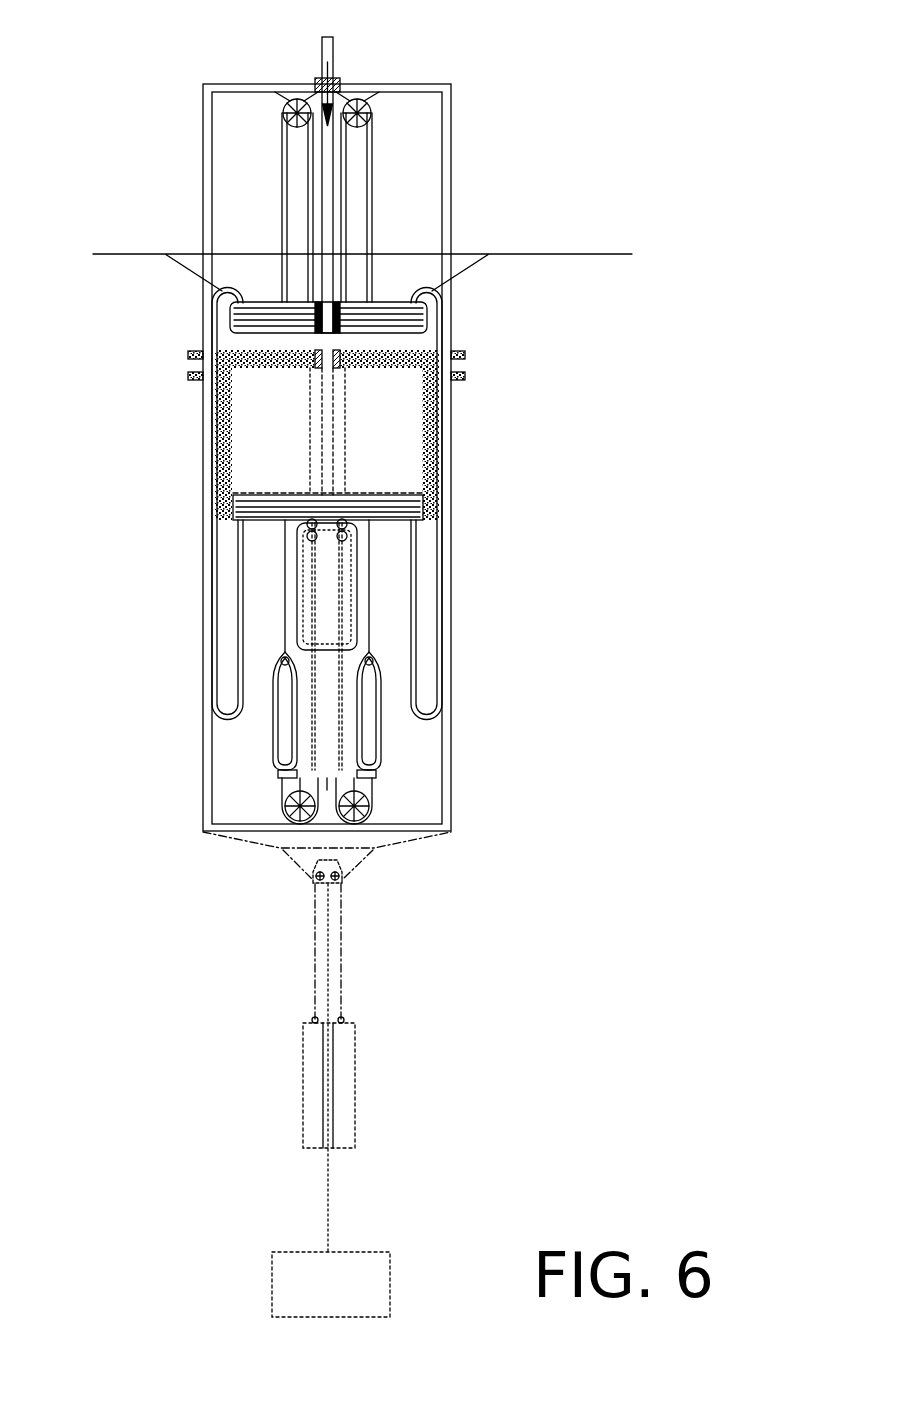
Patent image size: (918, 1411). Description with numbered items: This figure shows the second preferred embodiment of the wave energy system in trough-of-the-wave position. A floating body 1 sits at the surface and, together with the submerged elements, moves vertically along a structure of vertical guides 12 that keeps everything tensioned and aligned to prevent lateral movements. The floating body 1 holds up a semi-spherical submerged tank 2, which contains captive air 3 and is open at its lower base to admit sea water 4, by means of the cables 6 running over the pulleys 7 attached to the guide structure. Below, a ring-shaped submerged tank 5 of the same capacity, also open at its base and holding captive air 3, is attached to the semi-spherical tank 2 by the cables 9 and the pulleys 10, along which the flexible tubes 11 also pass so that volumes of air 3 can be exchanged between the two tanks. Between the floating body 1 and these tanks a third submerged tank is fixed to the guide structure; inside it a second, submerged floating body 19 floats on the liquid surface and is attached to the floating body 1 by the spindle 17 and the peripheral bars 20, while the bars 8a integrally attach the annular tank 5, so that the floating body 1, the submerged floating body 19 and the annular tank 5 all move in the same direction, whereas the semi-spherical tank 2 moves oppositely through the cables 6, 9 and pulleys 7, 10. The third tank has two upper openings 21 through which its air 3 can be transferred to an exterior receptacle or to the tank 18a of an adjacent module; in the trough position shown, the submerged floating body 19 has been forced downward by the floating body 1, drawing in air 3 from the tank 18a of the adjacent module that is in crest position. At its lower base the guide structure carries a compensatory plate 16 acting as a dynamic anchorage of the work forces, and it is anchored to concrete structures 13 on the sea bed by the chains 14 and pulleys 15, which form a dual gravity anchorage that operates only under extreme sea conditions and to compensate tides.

The floating body 1 is at (382, 300).
The semi-spherical submerged tank 2 is at (283, 563).
The captive air 3 is at (255, 437).
The sea water 4 is at (328, 750).
The ring-shaped submerged tank 5 is at (258, 730).
The cables 6 is at (282, 183).
The pulleys 7 is at (357, 100).
The bars 8a is at (290, 591).
The cables 9 is at (288, 686).
The pulleys 10 is at (345, 826).
The flexible tubes 11 is at (340, 757).
The structure of vertical guides 12 is at (443, 135).
The concrete structures 13 is at (285, 1288).
The chains 14 is at (343, 976).
The pulleys 15 is at (338, 900).
The compensatory plate 16 is at (398, 840).
The spindle 17 is at (327, 167).
The tank of the adjacent module 18a is at (432, 470).
The submerged floating body 19 is at (260, 500).
The peripheral bars 20 is at (212, 638).
The upper openings 21 is at (188, 353).